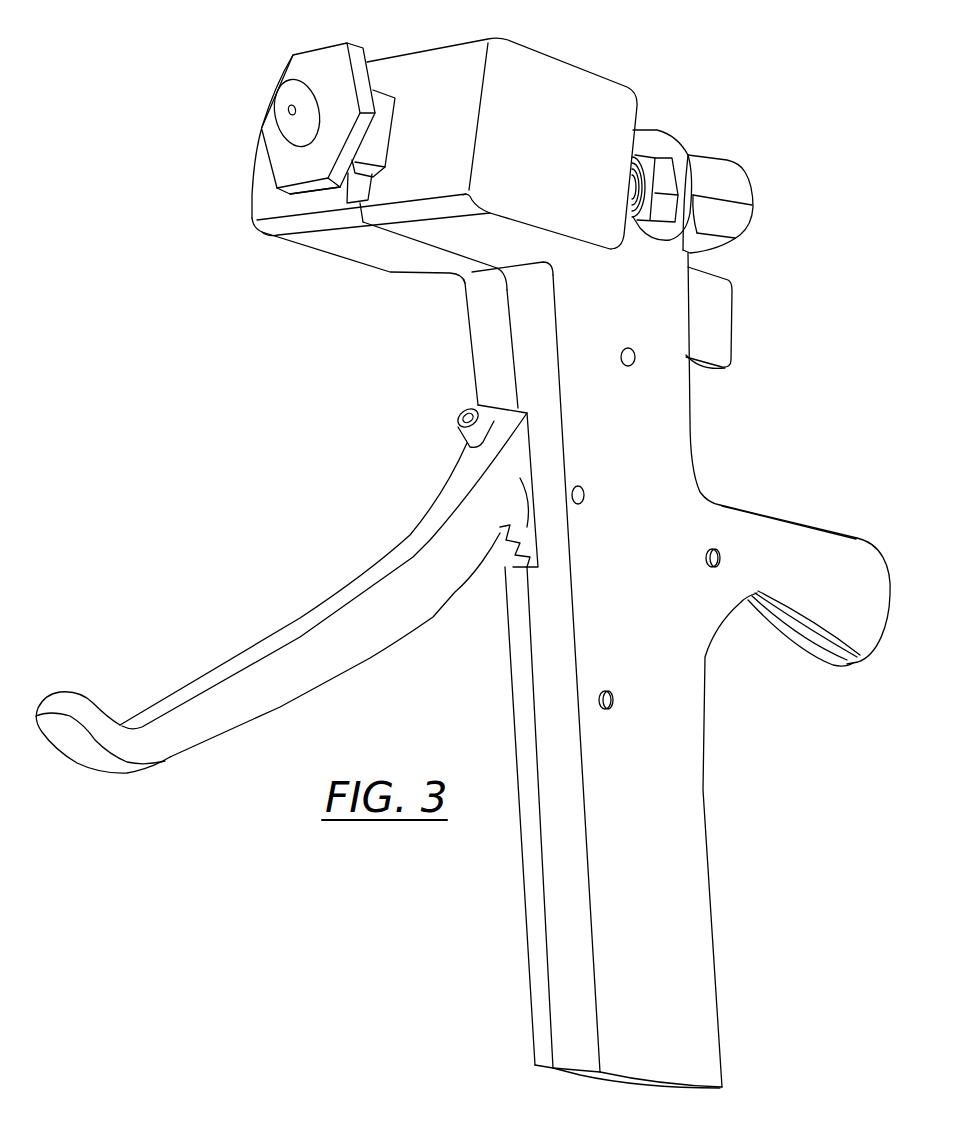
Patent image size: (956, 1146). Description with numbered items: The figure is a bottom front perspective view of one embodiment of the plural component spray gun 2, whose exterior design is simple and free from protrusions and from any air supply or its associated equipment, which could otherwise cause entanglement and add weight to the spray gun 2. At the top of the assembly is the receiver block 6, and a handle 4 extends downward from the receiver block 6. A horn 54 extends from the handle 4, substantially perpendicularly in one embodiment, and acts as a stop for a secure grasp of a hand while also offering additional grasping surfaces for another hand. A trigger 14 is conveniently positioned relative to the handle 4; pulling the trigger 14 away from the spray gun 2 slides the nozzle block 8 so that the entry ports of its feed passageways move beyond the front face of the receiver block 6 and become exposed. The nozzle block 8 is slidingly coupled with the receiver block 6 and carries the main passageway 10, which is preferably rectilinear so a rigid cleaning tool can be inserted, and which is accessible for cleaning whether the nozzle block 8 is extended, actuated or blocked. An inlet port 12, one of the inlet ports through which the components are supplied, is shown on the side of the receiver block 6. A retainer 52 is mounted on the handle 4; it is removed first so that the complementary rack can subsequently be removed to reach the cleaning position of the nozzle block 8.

The plural component spray gun 2 is at (412, 318).
The handle 4 is at (696, 810).
The receiver block 6 is at (428, 47).
The nozzle block 8 is at (322, 46).
The main passageway 10 is at (292, 110).
The inlet ports 12 is at (715, 162).
The trigger 14 is at (281, 633).
The retainer 52 is at (722, 320).
The horn 54 is at (778, 517).